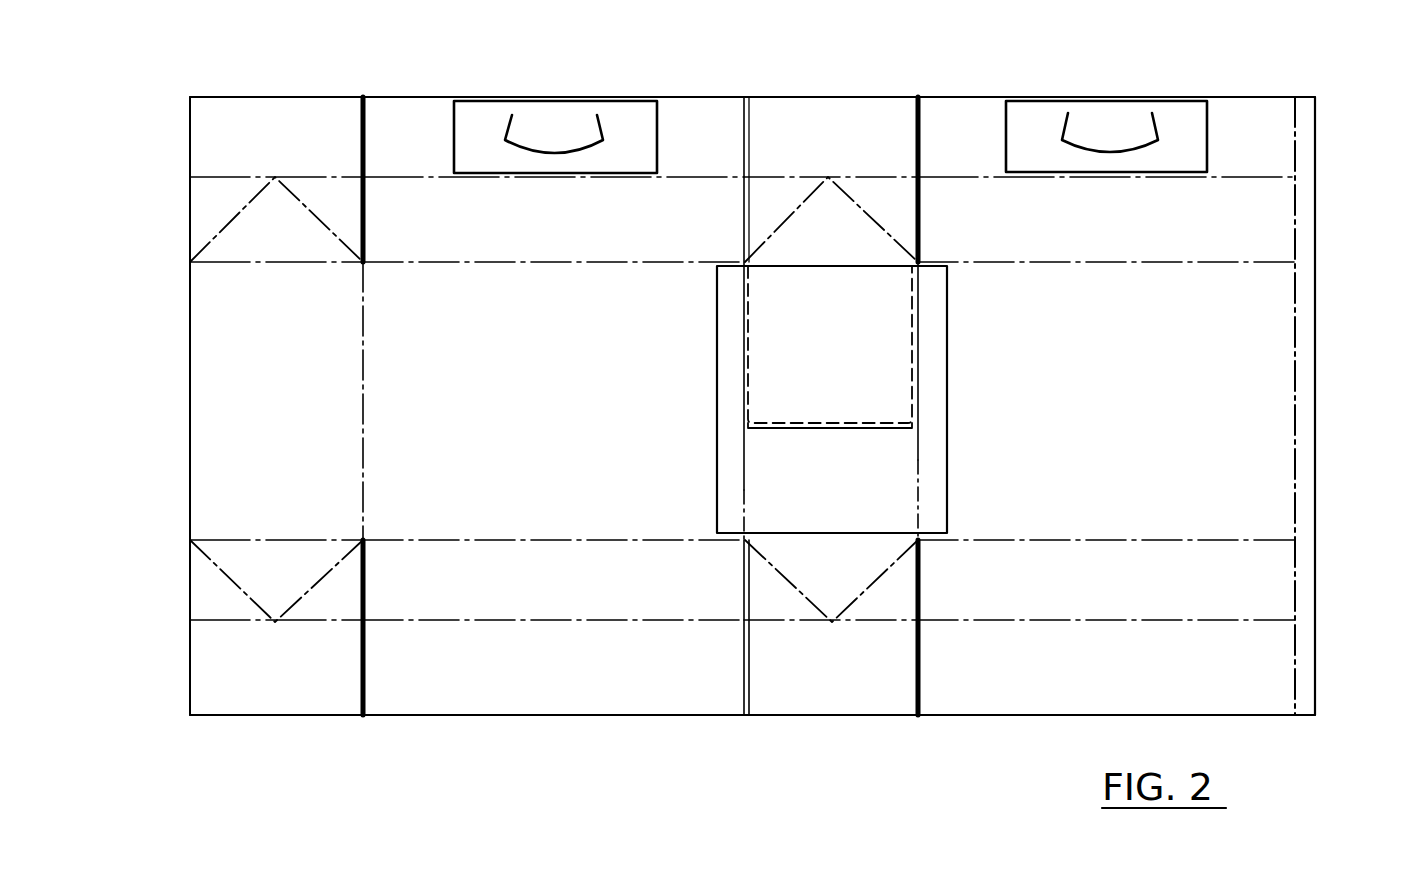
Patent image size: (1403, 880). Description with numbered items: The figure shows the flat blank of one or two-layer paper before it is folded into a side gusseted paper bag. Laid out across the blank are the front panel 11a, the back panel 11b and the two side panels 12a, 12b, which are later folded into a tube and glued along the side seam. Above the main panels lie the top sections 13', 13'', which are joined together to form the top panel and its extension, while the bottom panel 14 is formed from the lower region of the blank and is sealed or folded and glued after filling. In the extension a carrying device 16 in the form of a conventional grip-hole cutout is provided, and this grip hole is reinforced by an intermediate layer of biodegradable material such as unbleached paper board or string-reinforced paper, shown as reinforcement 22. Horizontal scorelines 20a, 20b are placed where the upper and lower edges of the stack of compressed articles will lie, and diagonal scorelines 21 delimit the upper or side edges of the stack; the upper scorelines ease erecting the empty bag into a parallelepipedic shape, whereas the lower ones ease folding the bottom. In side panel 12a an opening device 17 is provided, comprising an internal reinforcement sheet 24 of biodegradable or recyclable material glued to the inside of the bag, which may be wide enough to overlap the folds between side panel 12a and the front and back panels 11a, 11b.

The front panel 11a is at (1273, 423).
The back panel 11b is at (383, 318).
The side panel 12a is at (893, 535).
The side panel 12b is at (220, 433).
The top section 13' is at (1159, 180).
The top section 13'' is at (553, 135).
The bottom panel 14 is at (1320, 538).
The carrying device 16 is at (545, 133).
The opening device 17 is at (835, 312).
The horizontal scoreline 20a is at (1253, 258).
The horizontal scoreline 20b is at (553, 543).
The diagonal scorelines 21 is at (318, 216).
The reinforcement 22 is at (635, 118).
The reinforcement sheet 24 is at (933, 282).